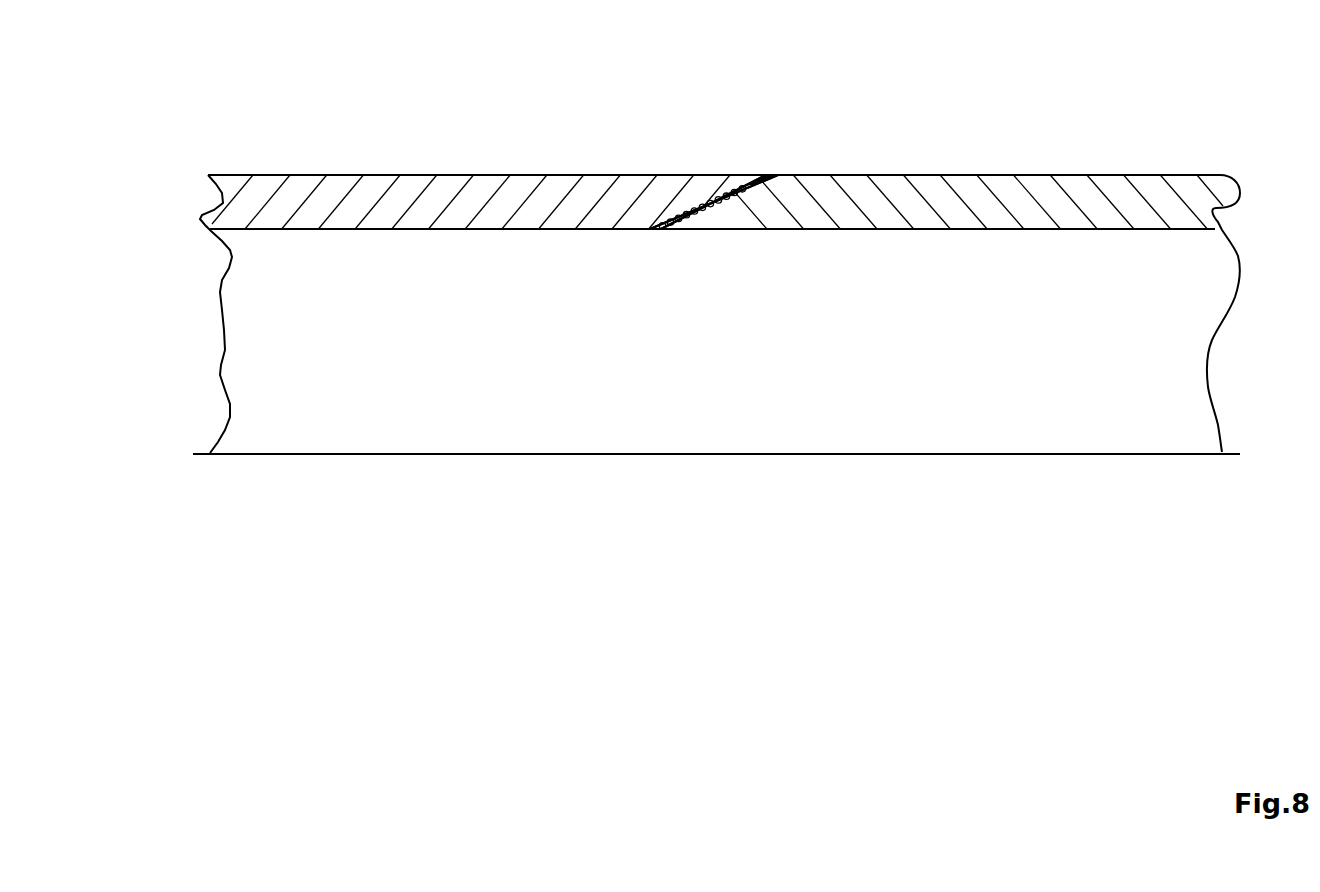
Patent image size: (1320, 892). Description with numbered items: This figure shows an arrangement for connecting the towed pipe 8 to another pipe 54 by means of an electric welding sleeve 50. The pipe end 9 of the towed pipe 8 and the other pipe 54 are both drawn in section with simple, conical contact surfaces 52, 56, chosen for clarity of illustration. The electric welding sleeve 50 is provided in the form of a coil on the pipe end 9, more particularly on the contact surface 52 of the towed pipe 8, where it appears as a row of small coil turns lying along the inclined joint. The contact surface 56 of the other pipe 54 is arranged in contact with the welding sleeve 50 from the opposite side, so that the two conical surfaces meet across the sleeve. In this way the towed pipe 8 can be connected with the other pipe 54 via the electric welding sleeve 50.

The towed pipe 8 is at (525, 197).
The pipe end 9 is at (706, 182).
The electric welding sleeve 50 is at (692, 227).
The contact surface 52 is at (739, 187).
The other pipe 54 is at (947, 198).
The contact surface 56 is at (716, 199).